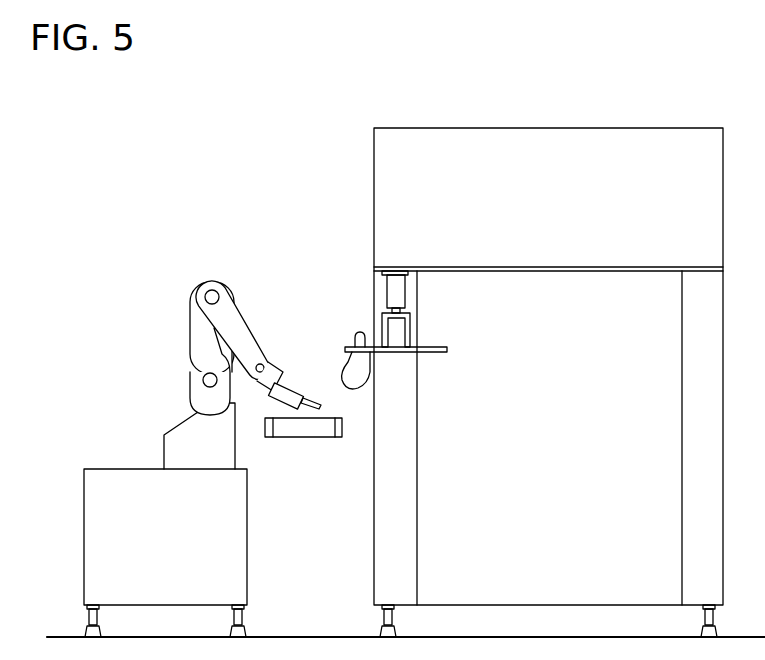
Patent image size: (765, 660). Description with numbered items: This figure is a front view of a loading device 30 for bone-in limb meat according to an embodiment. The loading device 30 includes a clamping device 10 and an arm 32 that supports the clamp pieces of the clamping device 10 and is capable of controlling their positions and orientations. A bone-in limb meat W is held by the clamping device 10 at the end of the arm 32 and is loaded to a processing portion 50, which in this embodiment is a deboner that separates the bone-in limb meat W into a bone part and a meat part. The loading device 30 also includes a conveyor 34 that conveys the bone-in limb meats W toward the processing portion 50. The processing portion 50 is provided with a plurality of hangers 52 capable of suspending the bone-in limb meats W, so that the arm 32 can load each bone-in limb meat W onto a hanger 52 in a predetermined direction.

The loading device 30 is at (247, 180).
The arm 32 is at (247, 313).
The clamping device 10 is at (298, 392).
The conveyor 34 is at (327, 437).
The processing portion 50 is at (374, 182).
The hanger 52 is at (370, 337).
The bone-in limb meat W is at (343, 372).